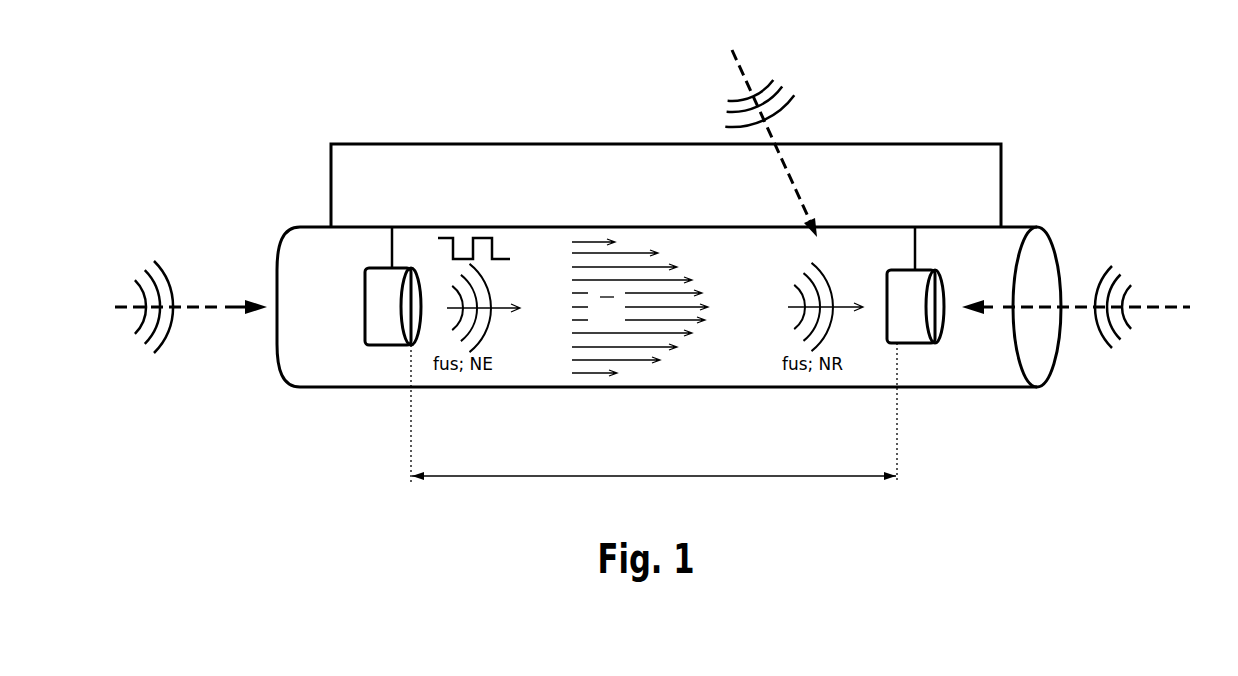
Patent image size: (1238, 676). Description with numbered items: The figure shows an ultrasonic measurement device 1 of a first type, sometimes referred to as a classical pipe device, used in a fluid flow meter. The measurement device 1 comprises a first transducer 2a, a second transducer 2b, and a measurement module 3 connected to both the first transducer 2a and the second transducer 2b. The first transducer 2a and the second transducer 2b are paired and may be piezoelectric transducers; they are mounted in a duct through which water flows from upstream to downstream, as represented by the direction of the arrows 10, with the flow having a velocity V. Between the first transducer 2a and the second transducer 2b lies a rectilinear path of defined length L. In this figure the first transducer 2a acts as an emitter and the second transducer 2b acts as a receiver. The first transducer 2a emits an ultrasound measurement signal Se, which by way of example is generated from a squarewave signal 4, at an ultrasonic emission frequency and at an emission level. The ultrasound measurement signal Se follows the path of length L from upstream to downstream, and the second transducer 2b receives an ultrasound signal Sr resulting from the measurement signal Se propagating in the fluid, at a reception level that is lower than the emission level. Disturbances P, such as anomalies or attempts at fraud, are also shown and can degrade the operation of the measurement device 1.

The measurement device 1 is at (488, 82).
The first transducer 2a is at (366, 332).
The second transducer 2b is at (944, 333).
The measurement module 3 is at (578, 150).
The squarewave signal 4 is at (466, 226).
The arrows 10 is at (640, 339).
The ultrasound measurement signal Se is at (490, 283).
The ultrasound signal Sr is at (827, 272).
The disturbances P is at (207, 309).
The length L is at (654, 423).
The mean flow velocity V is at (607, 309).